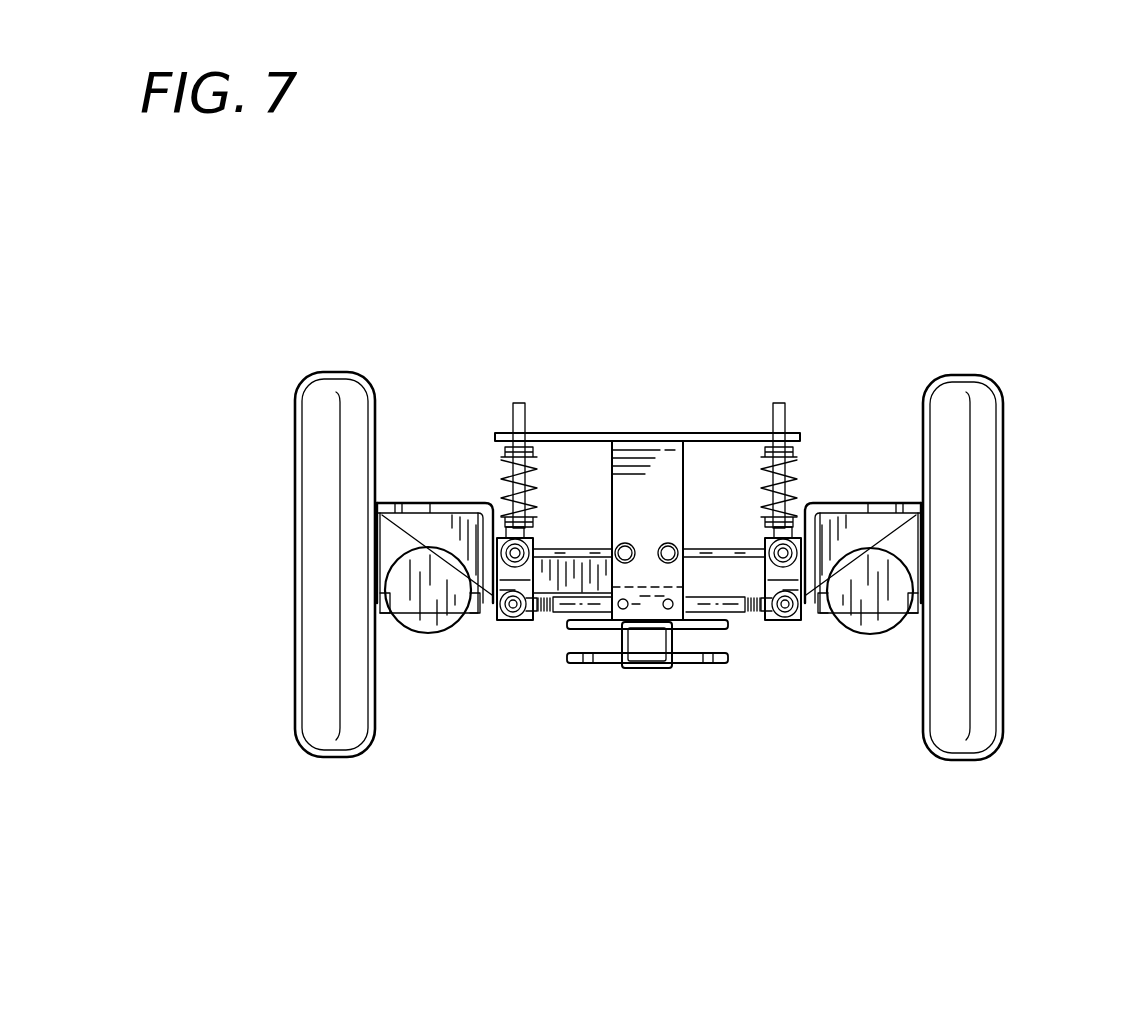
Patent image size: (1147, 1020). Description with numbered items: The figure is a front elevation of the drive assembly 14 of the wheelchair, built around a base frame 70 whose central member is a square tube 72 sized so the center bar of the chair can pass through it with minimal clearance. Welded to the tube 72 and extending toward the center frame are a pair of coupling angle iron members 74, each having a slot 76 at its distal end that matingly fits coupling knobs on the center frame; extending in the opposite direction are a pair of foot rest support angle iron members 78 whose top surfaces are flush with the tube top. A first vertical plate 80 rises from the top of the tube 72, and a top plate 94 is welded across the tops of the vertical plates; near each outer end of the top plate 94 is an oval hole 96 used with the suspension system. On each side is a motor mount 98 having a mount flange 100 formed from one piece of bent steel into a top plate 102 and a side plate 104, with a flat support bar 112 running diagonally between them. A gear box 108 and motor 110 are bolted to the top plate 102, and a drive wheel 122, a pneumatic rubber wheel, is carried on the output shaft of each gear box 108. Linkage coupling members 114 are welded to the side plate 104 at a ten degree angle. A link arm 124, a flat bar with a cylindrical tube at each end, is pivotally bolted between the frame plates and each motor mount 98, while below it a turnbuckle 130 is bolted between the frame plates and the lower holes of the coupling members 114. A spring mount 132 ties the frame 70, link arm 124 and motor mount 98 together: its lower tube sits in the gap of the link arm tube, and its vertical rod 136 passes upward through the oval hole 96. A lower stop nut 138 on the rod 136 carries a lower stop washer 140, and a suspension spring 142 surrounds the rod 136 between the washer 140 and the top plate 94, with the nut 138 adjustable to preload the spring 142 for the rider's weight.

The drive assembly 14 is at (965, 366).
The base frame 70 is at (647, 421).
The square tube 72 is at (643, 670).
The coupling angle iron members 74 is at (583, 664).
The slot 76 is at (575, 665).
The foot rest support angle iron members 78 is at (556, 630).
The first vertical plate 80 is at (624, 512).
The top plate 94 is at (684, 433).
The oval hole 96 is at (510, 458).
The motor mount 98 is at (378, 504).
The mount flange 100 is at (400, 478).
The top plate 102 is at (385, 505).
The side plate 104 is at (478, 622).
The gear box 108 is at (382, 615).
The motor 110 is at (425, 634).
The flat support bar 112 is at (493, 538).
The linkage coupling members 114 is at (500, 620).
The drive wheel 122 is at (325, 372).
The link arm 124 is at (722, 552).
The turnbuckle 130 is at (558, 622).
The spring mount 132 is at (525, 390).
The vertical rod 136 is at (536, 446).
The lower stop nut 138 is at (573, 548).
The lower stop washer 140 is at (536, 527).
The suspension spring 142 is at (497, 530).